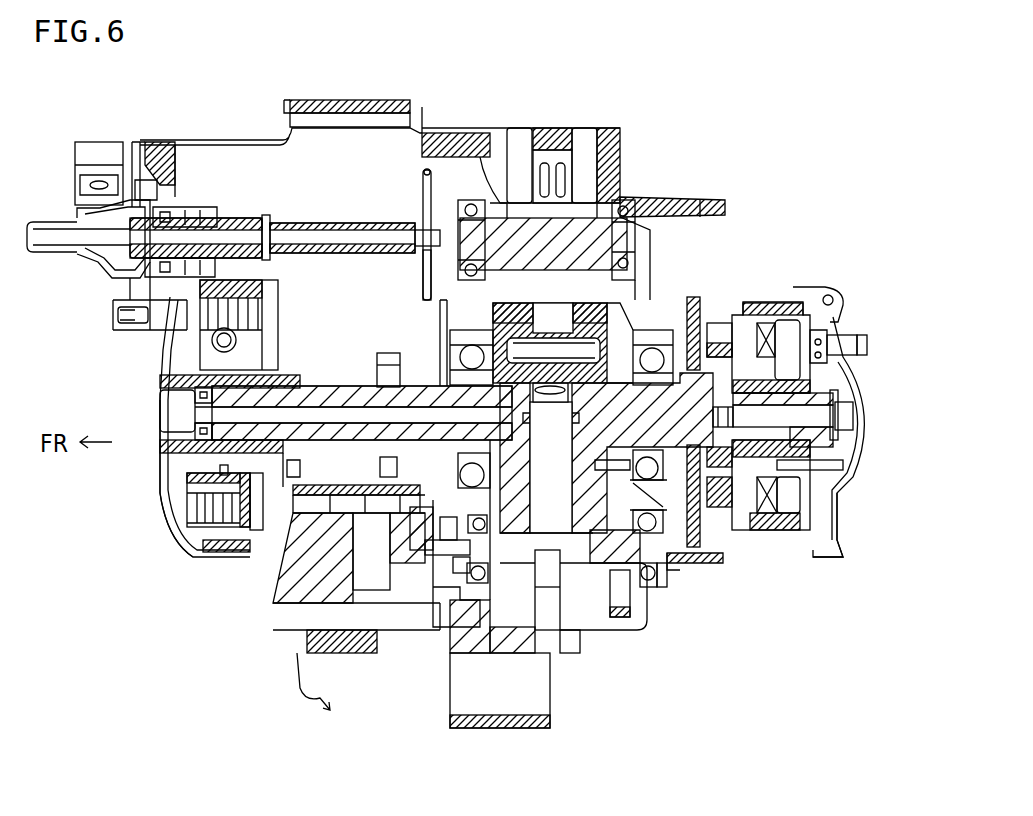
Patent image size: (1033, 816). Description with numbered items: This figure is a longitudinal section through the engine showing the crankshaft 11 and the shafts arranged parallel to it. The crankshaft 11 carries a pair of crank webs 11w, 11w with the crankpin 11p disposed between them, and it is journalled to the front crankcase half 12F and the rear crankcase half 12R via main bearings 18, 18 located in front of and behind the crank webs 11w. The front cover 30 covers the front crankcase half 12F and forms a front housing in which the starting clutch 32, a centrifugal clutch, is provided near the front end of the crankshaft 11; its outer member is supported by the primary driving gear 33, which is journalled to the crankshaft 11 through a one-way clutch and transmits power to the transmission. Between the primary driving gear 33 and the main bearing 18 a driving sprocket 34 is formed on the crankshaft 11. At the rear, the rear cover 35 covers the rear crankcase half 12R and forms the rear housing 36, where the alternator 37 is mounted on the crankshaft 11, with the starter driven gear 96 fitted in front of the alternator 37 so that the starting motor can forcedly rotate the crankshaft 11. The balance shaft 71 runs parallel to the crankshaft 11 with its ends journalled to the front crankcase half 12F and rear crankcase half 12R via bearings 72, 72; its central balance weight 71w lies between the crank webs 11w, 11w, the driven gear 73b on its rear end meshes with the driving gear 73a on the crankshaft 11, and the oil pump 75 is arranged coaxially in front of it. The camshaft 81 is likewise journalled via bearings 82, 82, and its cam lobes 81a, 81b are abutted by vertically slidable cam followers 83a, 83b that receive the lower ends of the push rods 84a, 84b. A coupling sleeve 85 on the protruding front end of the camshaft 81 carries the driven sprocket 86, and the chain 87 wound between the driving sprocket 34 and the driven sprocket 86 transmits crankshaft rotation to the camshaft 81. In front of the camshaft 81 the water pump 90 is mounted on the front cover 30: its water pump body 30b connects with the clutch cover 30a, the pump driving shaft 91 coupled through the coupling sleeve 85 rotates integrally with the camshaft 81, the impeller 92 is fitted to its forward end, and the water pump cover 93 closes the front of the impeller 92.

The crankshaft 11 is at (420, 386).
The crankpin 11p is at (560, 332).
The crank web 11w is at (606, 453).
The front crankcase half 12F is at (422, 107).
The rear crankcase half 12R is at (695, 198).
The main bearing 18 is at (462, 357).
The front cover 30 is at (238, 140).
The clutch cover 30a is at (160, 500).
The water pump body 30b is at (197, 206).
The starting clutch 32 is at (276, 297).
The primary driving gear 33 is at (380, 365).
The driving sprocket 34 is at (415, 447).
The rear cover 35 is at (837, 500).
The rear housing 36 is at (762, 540).
The alternator 37 is at (791, 288).
The balance shaft 71 is at (580, 567).
The balance weight 71w is at (562, 630).
The bearing 72 is at (484, 579).
The driving gear 73a is at (640, 330).
The driven gear 73b is at (627, 633).
The oil pump 75 is at (412, 608).
The camshaft 81 is at (548, 163).
The cam lobe 81a is at (586, 301).
The cam lobe 81b is at (511, 301).
The bearing 82 is at (462, 208).
The cam follower 83a is at (605, 185).
The cam follower 83b is at (486, 160).
The push rod 84a is at (592, 133).
The push rod 84b is at (512, 133).
The coupling sleeve 85 is at (430, 300).
The driven sprocket 86 is at (421, 172).
The chain 87 is at (423, 323).
The water pump 90 is at (143, 126).
The pump driving shaft 91 is at (330, 223).
The impeller 92 is at (130, 157).
The water pump cover 93 is at (127, 284).
The starter driven gear 96 is at (703, 520).